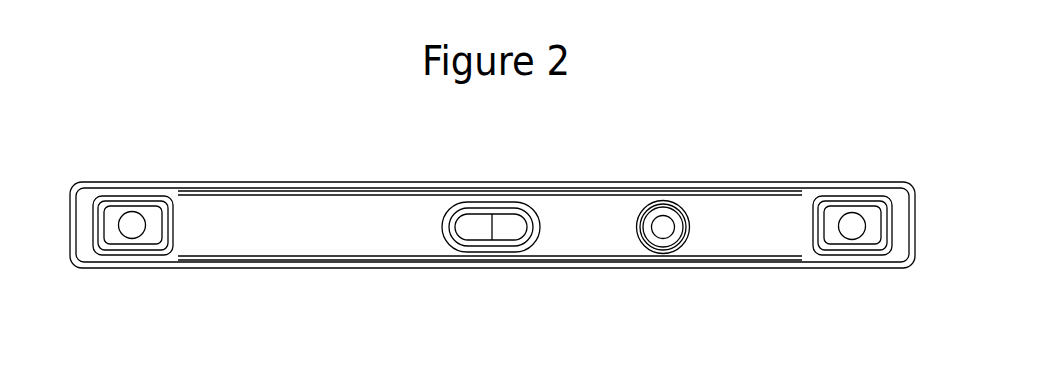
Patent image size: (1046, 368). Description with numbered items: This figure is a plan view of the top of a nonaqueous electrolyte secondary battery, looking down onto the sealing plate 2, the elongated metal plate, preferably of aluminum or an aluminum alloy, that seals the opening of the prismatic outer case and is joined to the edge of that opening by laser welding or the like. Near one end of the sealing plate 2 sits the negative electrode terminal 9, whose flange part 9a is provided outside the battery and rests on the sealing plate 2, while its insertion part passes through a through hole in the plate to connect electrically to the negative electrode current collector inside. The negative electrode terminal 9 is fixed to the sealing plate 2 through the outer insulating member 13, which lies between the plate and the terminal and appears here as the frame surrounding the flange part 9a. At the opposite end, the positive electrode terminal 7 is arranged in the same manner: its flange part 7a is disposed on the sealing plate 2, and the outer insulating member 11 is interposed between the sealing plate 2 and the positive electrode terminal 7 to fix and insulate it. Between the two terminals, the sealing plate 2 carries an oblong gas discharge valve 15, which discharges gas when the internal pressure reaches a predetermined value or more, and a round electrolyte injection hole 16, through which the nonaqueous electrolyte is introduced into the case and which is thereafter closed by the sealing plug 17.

The sealing plate 2 is at (587, 235).
The positive electrode terminal 7 is at (851, 240).
The flange part 7a is at (873, 210).
The negative electrode terminal 9 is at (132, 237).
The flange part 9a is at (112, 215).
The outer insulating member 11 is at (855, 197).
The outer insulating member 13 is at (140, 200).
The gas discharge valve 15 is at (475, 232).
The electrolyte injection hole 16 is at (665, 238).
The sealing plug 17 is at (663, 227).